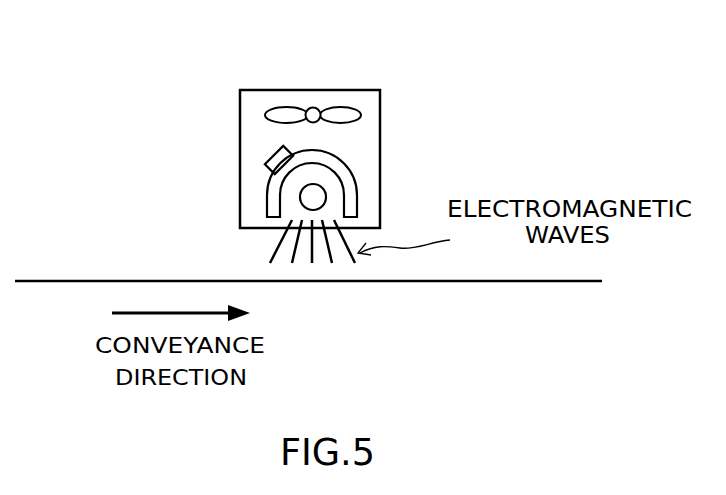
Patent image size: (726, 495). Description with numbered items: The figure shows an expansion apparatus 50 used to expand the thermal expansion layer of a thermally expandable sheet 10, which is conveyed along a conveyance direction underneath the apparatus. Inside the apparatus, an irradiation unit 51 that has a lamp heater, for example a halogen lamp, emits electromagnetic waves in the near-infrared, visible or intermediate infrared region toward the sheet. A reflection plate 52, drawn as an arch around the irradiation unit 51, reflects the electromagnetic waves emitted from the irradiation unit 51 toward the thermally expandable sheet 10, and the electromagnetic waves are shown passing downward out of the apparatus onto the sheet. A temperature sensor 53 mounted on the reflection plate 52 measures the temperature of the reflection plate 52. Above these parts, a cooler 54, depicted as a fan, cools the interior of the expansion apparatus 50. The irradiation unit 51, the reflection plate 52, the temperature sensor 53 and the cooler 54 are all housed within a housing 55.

The thermally expandable sheet 10 is at (52, 281).
The expansion apparatus 50 is at (455, 80).
The irradiation unit 51 is at (326, 197).
The reflection plate 52 is at (343, 167).
The temperature sensor 53 is at (266, 160).
The cooler 54 is at (270, 108).
The housing 55 is at (337, 90).